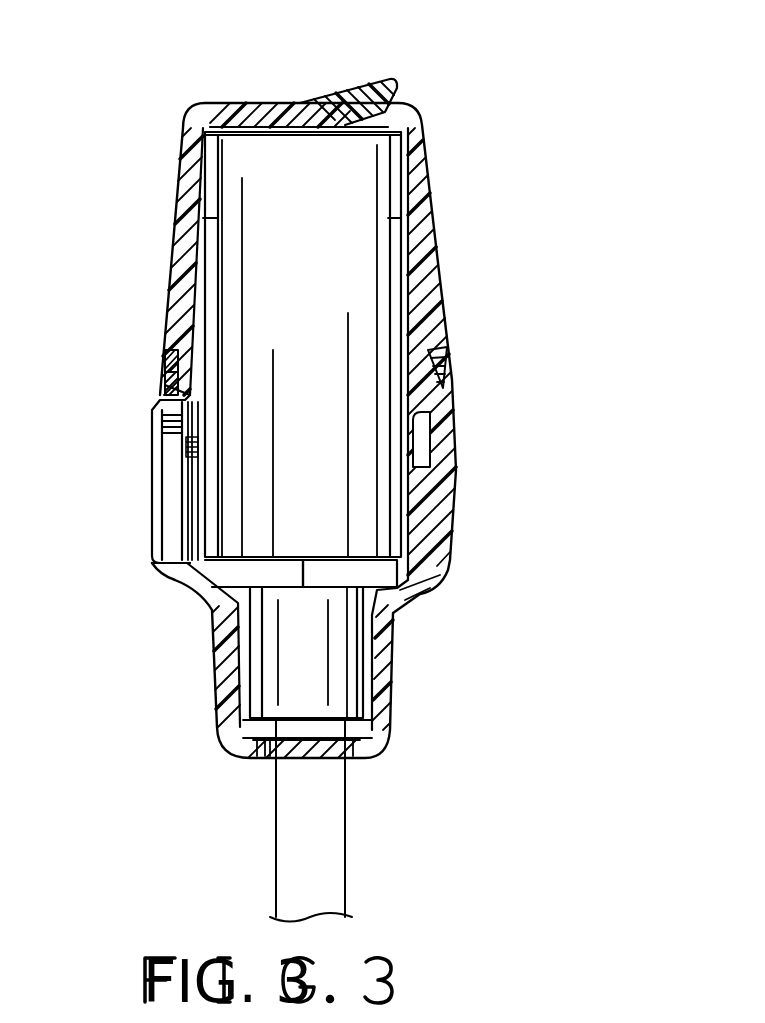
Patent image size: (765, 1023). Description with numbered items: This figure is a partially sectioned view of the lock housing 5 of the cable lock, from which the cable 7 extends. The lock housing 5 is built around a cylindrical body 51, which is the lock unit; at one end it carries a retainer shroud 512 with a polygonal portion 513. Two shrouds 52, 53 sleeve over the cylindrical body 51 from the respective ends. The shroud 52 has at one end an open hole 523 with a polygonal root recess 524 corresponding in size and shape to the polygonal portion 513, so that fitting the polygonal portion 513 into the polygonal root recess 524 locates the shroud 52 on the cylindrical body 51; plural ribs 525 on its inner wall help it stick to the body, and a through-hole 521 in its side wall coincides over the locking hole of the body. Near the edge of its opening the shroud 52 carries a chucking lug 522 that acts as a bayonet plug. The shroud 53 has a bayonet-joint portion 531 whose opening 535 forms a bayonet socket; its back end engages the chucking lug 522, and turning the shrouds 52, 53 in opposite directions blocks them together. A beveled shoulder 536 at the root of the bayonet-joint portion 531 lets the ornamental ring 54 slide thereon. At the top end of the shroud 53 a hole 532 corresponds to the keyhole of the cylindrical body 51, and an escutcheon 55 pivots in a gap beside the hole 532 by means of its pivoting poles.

The lock housing 5 is at (455, 235).
The cable 7 is at (323, 813).
The cylindrical body 51 is at (376, 334).
The shroud 52 is at (448, 548).
The shroud 53 is at (430, 292).
The ornamental ring 54 is at (167, 355).
The escutcheon 55 is at (300, 103).
The retainer shroud 512 is at (345, 660).
The polygonal portion 513 is at (232, 571).
The through-hole 521 is at (165, 470).
The chucking lug 522 is at (167, 380).
The open hole 523 is at (245, 648).
The polygonal root recess 524 is at (400, 576).
The ribs 525 is at (445, 498).
The bayonet-joint portion 531 is at (420, 385).
The hole 532 is at (397, 115).
The opening 535 is at (167, 372).
The beveled shoulder 536 is at (452, 441).